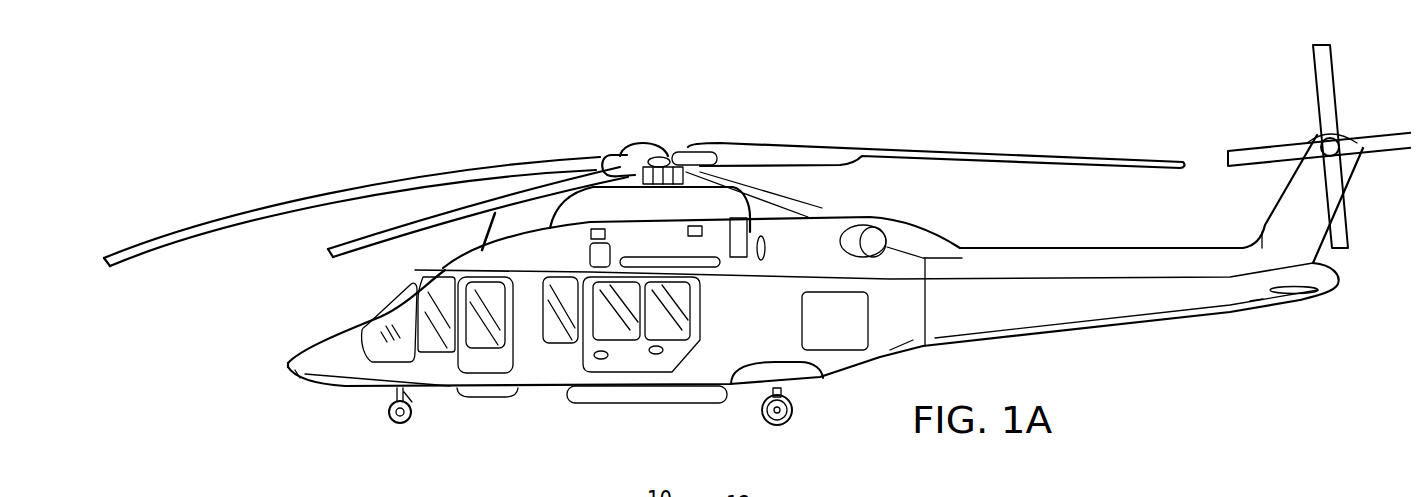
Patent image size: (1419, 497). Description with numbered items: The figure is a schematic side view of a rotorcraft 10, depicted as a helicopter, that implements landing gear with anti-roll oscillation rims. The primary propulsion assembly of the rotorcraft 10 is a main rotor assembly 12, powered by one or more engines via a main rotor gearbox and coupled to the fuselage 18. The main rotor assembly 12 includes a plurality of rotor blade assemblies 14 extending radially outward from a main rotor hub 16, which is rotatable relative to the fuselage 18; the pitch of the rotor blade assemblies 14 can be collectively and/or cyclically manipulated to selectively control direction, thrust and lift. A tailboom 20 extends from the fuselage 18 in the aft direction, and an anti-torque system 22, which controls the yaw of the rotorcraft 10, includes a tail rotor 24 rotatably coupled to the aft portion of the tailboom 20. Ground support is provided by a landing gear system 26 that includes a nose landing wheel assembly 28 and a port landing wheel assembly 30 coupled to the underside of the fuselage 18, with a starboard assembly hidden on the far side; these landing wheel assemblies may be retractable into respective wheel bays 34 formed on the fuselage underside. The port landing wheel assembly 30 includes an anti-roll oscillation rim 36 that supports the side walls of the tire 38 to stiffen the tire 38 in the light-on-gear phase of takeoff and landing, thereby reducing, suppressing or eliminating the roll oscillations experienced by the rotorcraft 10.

The rotorcraft 10 is at (503, 135).
The main rotor assembly 12 is at (633, 137).
The rotor blade assemblies 14 is at (237, 213).
The main rotor hub 16 is at (657, 143).
The fuselage 18 is at (307, 384).
The tailboom 20 is at (1078, 248).
The anti-torque system 22 is at (1342, 79).
The tail rotor 24 is at (1340, 156).
The landing gear system 26 is at (395, 434).
The nose landing wheel assembly 28 is at (389, 411).
The port landing wheel assembly 30 is at (763, 412).
The wheel bays 34 is at (807, 384).
The anti-roll oscillation rims 36 is at (777, 424).
The tires 38 is at (790, 423).